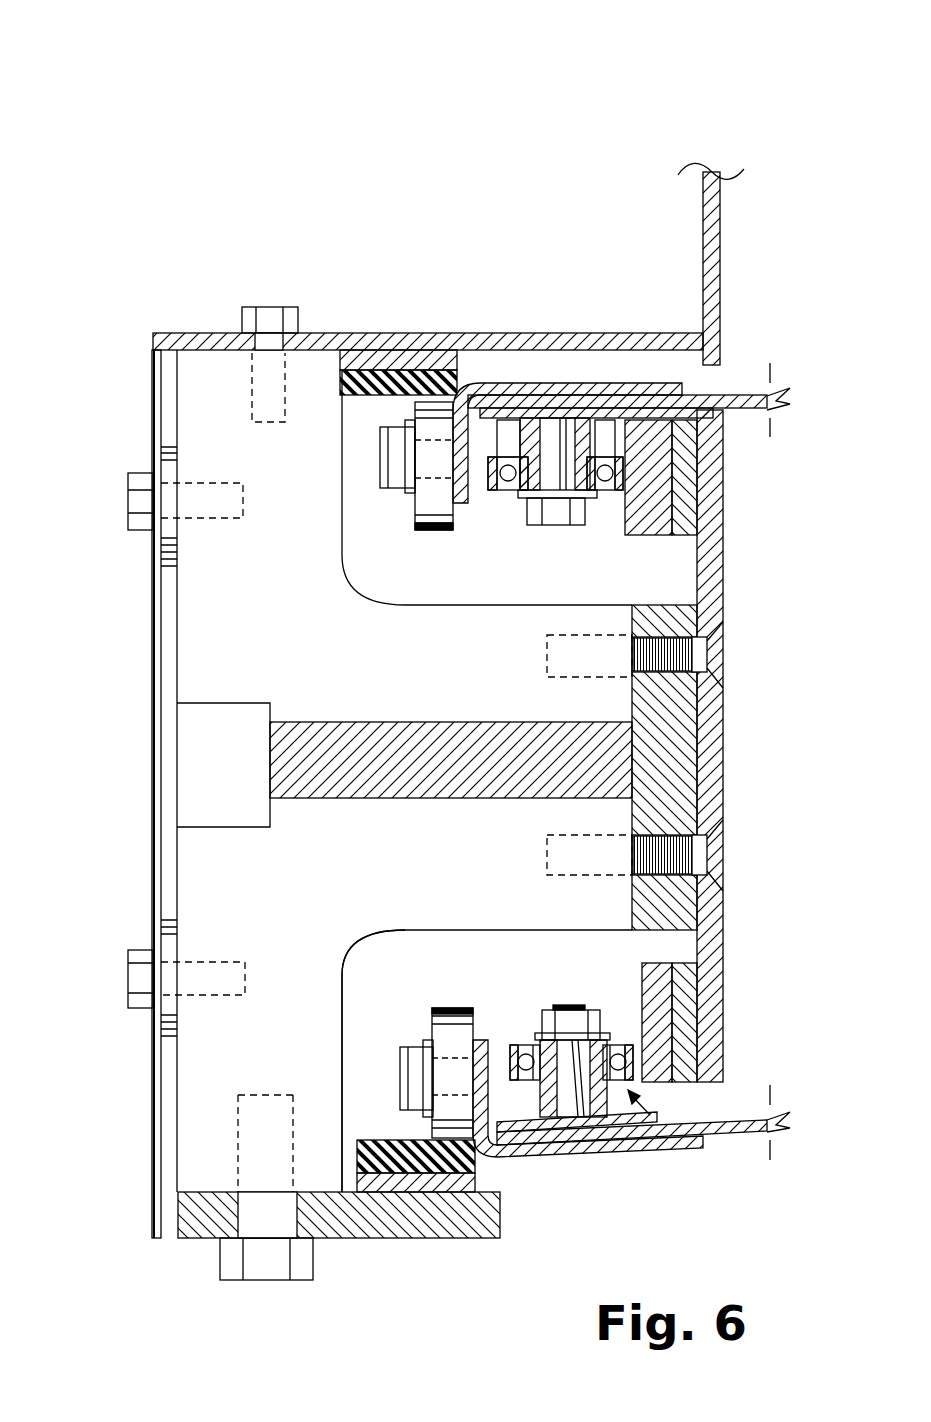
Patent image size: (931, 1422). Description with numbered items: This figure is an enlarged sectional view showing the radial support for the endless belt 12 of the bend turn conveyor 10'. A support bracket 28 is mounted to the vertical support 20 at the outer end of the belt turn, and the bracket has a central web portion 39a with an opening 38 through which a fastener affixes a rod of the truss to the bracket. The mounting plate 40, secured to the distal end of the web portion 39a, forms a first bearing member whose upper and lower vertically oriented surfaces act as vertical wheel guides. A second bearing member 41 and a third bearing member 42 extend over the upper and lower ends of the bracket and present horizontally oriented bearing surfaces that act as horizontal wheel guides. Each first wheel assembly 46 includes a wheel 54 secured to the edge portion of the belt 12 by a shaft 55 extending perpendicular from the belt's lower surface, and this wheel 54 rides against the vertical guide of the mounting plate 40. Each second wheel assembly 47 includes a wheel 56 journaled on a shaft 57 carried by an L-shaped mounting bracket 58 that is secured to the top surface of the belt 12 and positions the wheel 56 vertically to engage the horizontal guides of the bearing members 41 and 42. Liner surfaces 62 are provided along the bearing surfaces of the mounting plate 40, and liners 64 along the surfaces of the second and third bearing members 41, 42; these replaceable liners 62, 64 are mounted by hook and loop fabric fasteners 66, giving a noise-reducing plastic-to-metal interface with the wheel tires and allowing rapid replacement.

The bend turn conveyor 10' is at (761, 183).
The endless belt 12 is at (745, 395).
The vertical support 20 is at (152, 1068).
The support bracket 28 is at (590, 807).
The opening 38 is at (577, 717).
The central web portion 39a is at (663, 607).
The mounting plate 40 is at (723, 605).
The second bearing member 41 is at (220, 333).
The third bearing member 42 is at (340, 1240).
The first wheel assembly 46 is at (604, 430).
The second wheel assembly 47 is at (401, 1019).
The wheel 54 is at (520, 460).
The shaft 55 is at (560, 440).
The wheel 56 is at (415, 510).
The shaft 57 is at (382, 457).
The L-shaped mounting bracket 58 is at (483, 383).
The liner surface 62 is at (668, 433).
The liner 64 is at (420, 352).
The hook and loop fabric fastener 66 is at (360, 372).